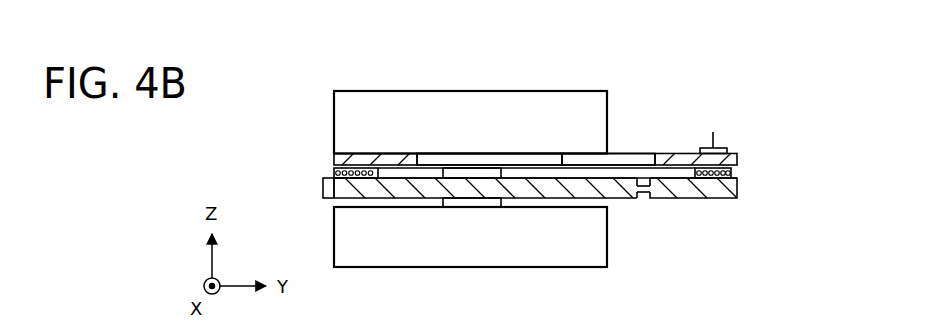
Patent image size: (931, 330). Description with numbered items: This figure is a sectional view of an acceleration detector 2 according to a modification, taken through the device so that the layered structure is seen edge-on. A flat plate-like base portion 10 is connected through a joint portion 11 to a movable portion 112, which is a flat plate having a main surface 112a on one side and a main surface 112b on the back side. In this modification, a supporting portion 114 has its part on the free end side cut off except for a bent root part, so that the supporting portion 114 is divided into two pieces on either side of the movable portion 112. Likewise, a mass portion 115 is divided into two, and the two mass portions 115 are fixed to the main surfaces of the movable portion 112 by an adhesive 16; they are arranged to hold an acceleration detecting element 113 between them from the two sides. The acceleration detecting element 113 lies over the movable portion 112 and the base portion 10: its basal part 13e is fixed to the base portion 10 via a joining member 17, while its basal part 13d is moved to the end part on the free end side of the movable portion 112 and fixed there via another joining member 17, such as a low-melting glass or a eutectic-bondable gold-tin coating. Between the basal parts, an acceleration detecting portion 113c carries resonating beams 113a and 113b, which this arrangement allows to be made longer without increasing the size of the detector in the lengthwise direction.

The acceleration detector 2 is at (714, 86).
The base portion 10 is at (738, 190).
The joint portion 11 is at (643, 198).
The basal part 13d is at (334, 156).
The basal part 13e is at (738, 159).
The adhesive 16 is at (458, 201).
The joining member 17 is at (334, 173).
The movable portion 112 is at (499, 215).
The main surface 112a is at (618, 178).
The main surface 112b is at (612, 198).
The acceleration detecting element 113 is at (666, 150).
The resonating beam 113a is at (614, 103).
The resonating beam 113b is at (569, 152).
The acceleration detecting portion 113c is at (524, 150).
The supporting portion 114 is at (323, 188).
The mass portion 115 is at (418, 91).